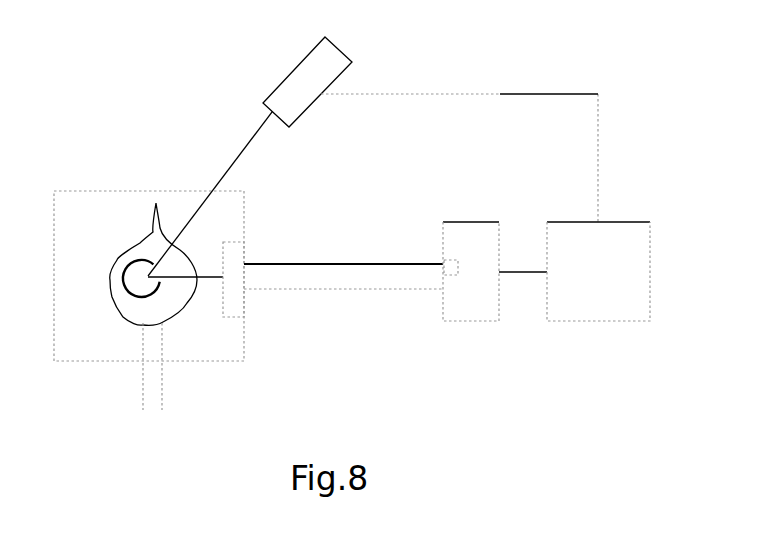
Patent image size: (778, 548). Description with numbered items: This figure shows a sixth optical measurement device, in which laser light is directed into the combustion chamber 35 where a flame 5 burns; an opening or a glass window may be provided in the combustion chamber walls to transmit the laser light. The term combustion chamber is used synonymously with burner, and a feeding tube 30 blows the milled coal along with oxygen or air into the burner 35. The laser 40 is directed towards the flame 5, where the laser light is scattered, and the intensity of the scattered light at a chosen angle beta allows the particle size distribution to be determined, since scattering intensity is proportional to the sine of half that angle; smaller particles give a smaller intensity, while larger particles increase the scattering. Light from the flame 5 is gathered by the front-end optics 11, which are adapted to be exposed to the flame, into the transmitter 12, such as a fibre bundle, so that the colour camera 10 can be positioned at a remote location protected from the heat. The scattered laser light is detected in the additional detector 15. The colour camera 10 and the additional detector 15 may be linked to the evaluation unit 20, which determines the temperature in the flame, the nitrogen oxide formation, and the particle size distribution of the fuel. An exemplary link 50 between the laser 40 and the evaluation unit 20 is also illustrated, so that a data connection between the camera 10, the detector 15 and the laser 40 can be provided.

The flame 5 is at (113, 297).
The colour camera 10 is at (477, 322).
The front-end optics 11 is at (245, 242).
The transmitter 12 is at (345, 264).
The additional detector 15 is at (458, 263).
The evaluation unit 20 is at (580, 287).
The feeding tube 30 is at (166, 394).
The combustion chamber 35 is at (172, 191).
The laser 40 is at (300, 64).
The link 50 is at (528, 94).